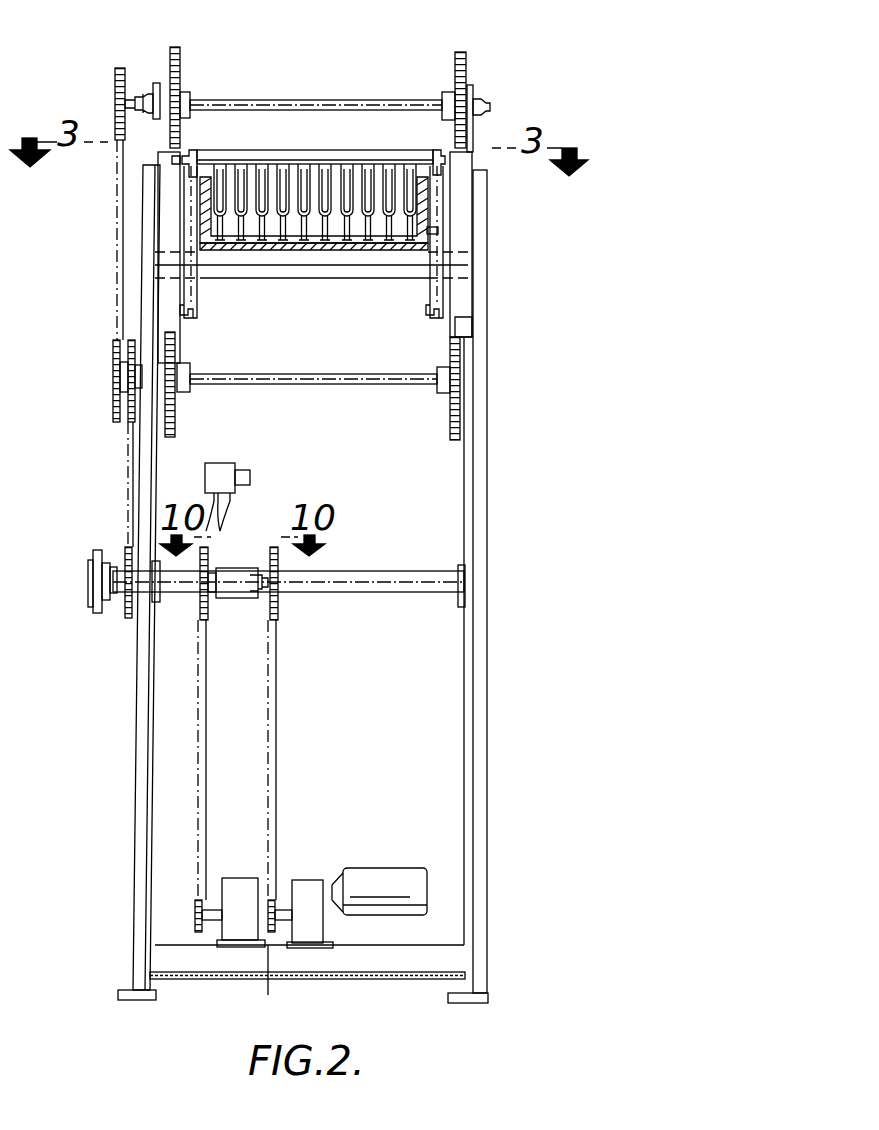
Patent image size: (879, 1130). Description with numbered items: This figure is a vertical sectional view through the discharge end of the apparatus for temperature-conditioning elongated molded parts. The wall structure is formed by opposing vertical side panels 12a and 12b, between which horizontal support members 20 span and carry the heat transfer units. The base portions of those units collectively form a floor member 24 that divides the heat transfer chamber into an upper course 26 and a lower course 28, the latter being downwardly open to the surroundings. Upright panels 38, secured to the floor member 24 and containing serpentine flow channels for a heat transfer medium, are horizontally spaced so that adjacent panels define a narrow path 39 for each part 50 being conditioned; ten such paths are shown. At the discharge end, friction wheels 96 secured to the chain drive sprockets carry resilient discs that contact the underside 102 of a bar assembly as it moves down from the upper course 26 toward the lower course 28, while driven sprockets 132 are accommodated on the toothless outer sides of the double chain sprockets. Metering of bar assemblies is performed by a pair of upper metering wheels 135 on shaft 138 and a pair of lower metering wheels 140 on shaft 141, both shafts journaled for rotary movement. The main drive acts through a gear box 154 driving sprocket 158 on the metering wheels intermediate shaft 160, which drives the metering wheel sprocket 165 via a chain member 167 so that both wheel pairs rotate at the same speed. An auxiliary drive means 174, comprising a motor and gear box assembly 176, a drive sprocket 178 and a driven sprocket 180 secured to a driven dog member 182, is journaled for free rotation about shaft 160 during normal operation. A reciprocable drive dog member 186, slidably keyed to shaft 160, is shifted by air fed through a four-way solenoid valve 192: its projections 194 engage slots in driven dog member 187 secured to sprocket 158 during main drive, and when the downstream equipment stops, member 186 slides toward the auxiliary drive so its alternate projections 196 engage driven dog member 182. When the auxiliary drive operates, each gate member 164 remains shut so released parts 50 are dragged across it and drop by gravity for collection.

The side panel 12a is at (477, 306).
The side panel 12b is at (142, 297).
The horizontal support member 20 is at (415, 262).
The floor member 24 is at (362, 250).
The upper course 26 is at (177, 237).
The lower course 28 is at (217, 352).
The upright panel 38 is at (427, 231).
The path 39 is at (327, 230).
The part 50 is at (307, 233).
The friction wheel 96 is at (198, 310).
The underside of bar assembly 102 is at (343, 180).
The driven sprocket 132 is at (190, 153).
The upper metering wheel 135 is at (180, 64).
The shaft 138 is at (305, 100).
The lower metering wheel 140 is at (175, 430).
The shaft 141 is at (280, 375).
The gear box 154 is at (235, 885).
The sprocket 158 is at (200, 612).
The metering wheels intermediate shaft 160 is at (400, 572).
The gate member 164 is at (132, 420).
The metering wheel sprocket 165 is at (118, 75).
The chain member 167 is at (118, 227).
The auxiliary drive means 174 is at (305, 880).
The motor and gear box assembly 176 is at (333, 918).
The drive sprocket 178 is at (296, 980).
The driven sprocket 180 is at (278, 610).
The driven dog member 182 is at (277, 600).
The reciprocable drive dog member 186 is at (247, 570).
The driven dog member 187 is at (215, 593).
The four-way solenoid valve 192 is at (228, 465).
The projection 194 is at (212, 580).
The projection 196 is at (257, 586).